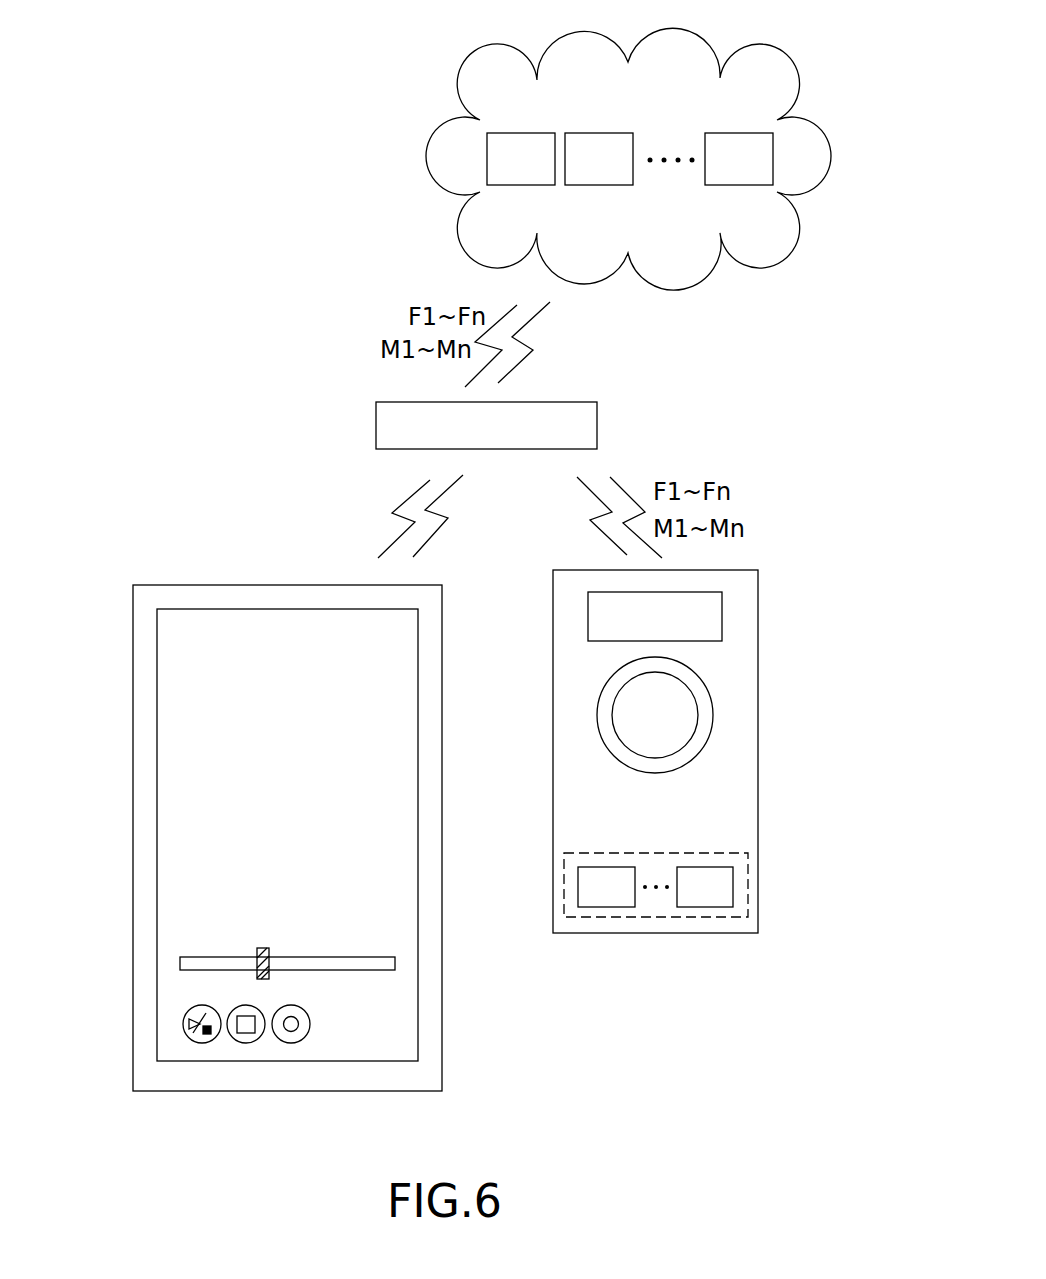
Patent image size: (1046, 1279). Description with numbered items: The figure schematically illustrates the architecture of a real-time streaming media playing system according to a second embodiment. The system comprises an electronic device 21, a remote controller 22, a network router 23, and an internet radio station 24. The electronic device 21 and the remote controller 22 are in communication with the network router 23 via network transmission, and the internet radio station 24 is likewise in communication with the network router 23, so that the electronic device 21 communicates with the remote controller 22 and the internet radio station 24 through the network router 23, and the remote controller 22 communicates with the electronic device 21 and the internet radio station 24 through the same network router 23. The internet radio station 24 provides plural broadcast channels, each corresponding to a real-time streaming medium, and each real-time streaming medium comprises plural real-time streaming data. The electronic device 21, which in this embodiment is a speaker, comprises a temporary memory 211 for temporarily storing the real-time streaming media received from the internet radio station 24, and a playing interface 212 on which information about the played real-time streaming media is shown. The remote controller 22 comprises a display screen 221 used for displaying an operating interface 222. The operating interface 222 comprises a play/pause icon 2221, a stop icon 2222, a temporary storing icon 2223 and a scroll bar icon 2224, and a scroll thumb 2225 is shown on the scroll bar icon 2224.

The internet radio station 24 is at (690, 48).
The network router 23 is at (543, 412).
The remote controller 22 is at (217, 590).
The display screen 221 is at (170, 835).
The operating interface 222 is at (264, 1030).
The play/pause icon 2221 is at (187, 1018).
The stop icon 2222 is at (233, 1037).
The temporary storing icon 2223 is at (302, 1038).
The scroll bar icon 2224 is at (312, 963).
The scroll thumb 2225 is at (258, 950).
The electronic device 21 is at (737, 737).
The playing interface 212 is at (713, 617).
The temporary memory 211 is at (667, 862).